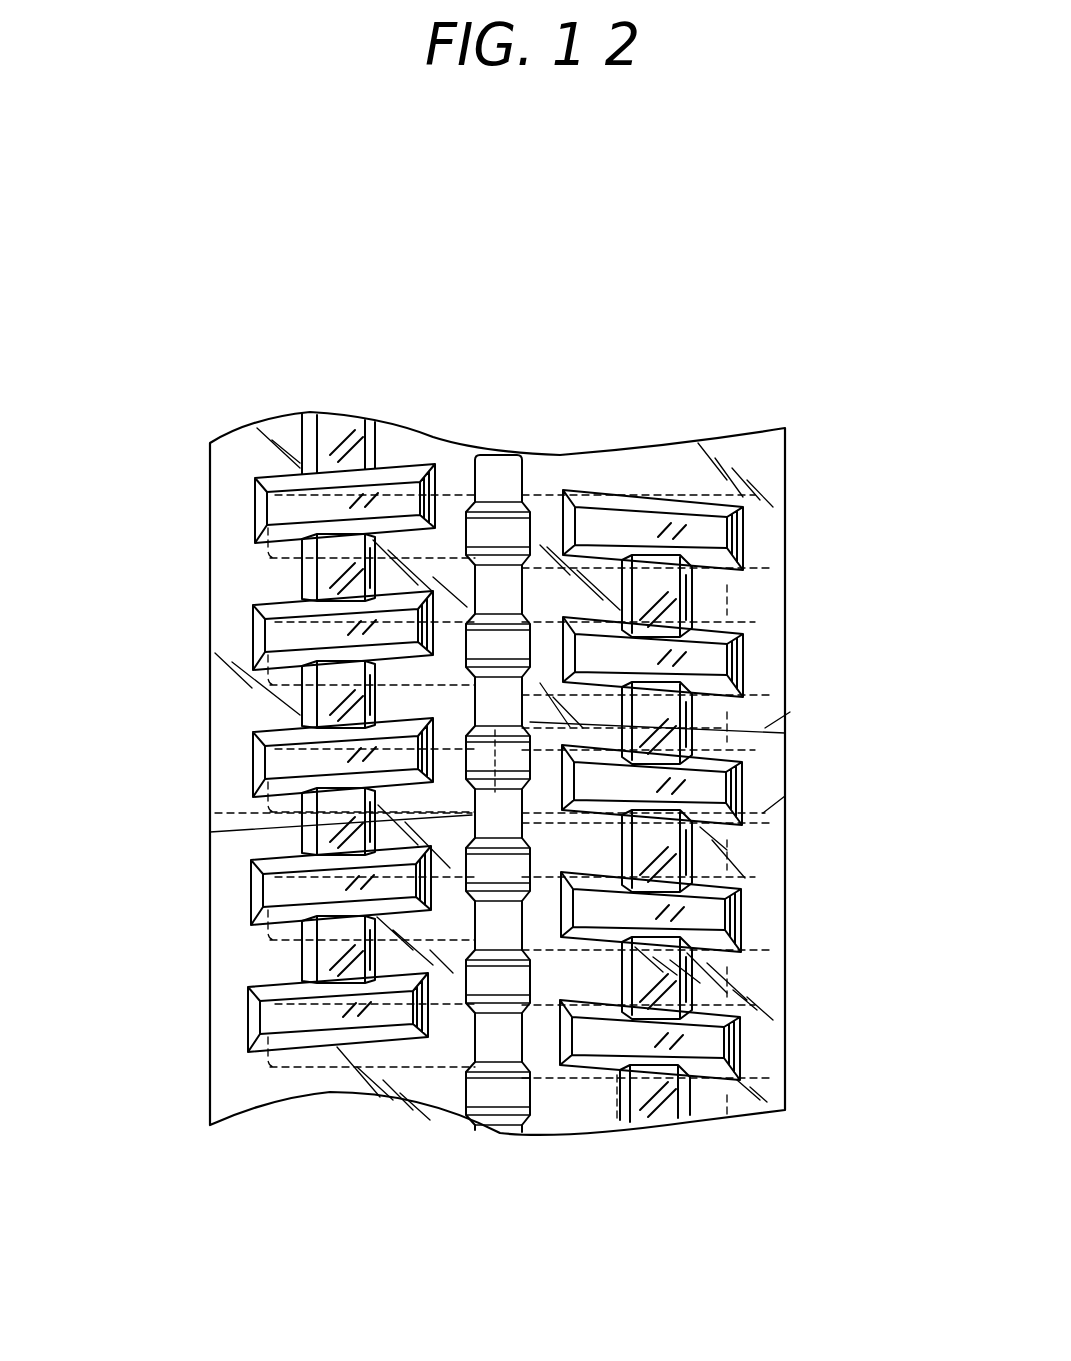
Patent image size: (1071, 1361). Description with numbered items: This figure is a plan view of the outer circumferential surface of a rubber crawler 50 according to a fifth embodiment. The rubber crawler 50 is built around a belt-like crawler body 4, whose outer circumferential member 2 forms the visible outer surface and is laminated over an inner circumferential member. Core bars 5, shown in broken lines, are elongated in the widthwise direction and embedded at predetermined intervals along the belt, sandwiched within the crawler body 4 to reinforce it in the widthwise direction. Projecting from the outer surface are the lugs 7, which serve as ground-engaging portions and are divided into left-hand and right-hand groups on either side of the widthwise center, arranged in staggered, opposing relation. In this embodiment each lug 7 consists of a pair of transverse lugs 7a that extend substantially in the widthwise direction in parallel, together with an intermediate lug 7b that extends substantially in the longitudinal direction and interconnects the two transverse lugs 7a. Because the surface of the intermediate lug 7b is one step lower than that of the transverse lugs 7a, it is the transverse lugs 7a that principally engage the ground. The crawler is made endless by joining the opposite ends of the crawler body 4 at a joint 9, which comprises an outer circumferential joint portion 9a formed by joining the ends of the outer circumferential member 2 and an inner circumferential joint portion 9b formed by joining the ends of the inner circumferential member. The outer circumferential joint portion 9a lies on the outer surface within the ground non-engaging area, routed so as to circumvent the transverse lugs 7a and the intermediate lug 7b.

The rubber crawler 50 is at (713, 407).
The outer circumferential member 2 is at (752, 1118).
The crawler body 4 is at (536, 836).
The core bar 5 is at (724, 628).
The lug 7 is at (130, 895).
The transverse lug 7a is at (255, 903).
The intermediate lug 7b is at (302, 945).
The joint 9 is at (485, 766).
The outer circumferential joint portion 9a is at (250, 845).
The inner circumferential joint portion 9b is at (225, 808).